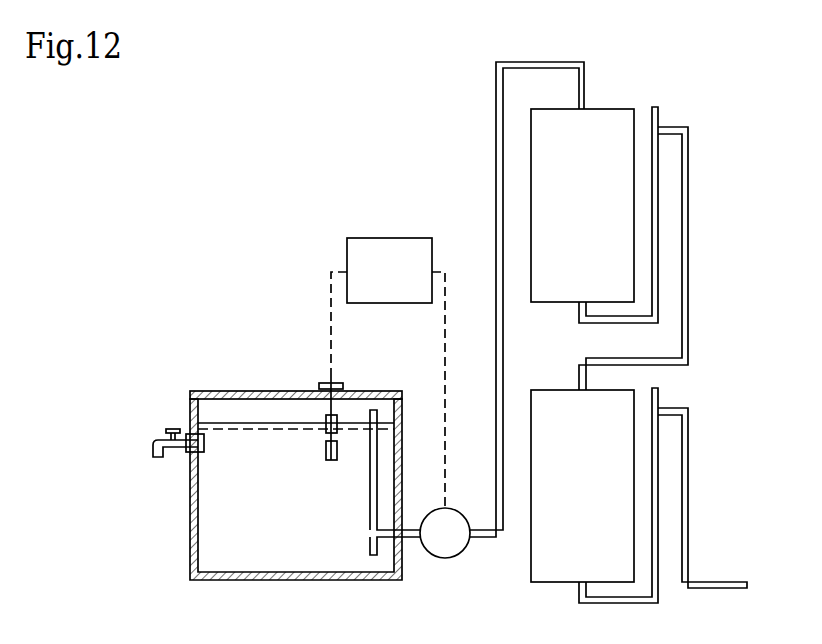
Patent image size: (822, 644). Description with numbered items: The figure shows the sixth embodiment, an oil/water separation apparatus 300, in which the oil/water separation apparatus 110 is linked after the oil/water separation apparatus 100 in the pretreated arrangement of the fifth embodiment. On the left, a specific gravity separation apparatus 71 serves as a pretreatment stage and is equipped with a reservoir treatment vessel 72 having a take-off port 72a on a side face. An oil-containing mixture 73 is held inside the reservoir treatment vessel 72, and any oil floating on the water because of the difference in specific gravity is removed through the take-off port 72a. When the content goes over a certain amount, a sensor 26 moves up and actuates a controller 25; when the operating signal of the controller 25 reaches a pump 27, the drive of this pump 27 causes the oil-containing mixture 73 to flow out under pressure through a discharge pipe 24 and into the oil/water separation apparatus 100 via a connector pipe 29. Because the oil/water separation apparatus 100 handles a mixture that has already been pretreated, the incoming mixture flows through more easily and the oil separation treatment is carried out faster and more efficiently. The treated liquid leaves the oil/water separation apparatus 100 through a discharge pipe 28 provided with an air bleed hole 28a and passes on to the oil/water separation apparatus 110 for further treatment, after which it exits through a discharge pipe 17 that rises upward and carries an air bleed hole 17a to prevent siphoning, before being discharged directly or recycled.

The oil/water separation apparatus 300 is at (610, 70).
The connector pipe 29 is at (495, 113).
The oil/water separation apparatus 100 is at (613, 120).
The air bleed hole 28a is at (660, 110).
The discharge pipe 28 is at (655, 252).
The oil/water separation apparatus 110 is at (545, 572).
The air bleed hole 17a is at (660, 391).
The discharge pipe 17 is at (655, 530).
The pump 27 is at (443, 548).
The discharge pipe 24 is at (372, 506).
The controller 25 is at (357, 249).
The sensor 26 is at (337, 450).
The specific gravity separation apparatus 71 is at (233, 390).
The reservoir treatment vessel 72 is at (192, 508).
The oil-containing mixture 73 is at (225, 557).
The take-off port 72a is at (153, 448).